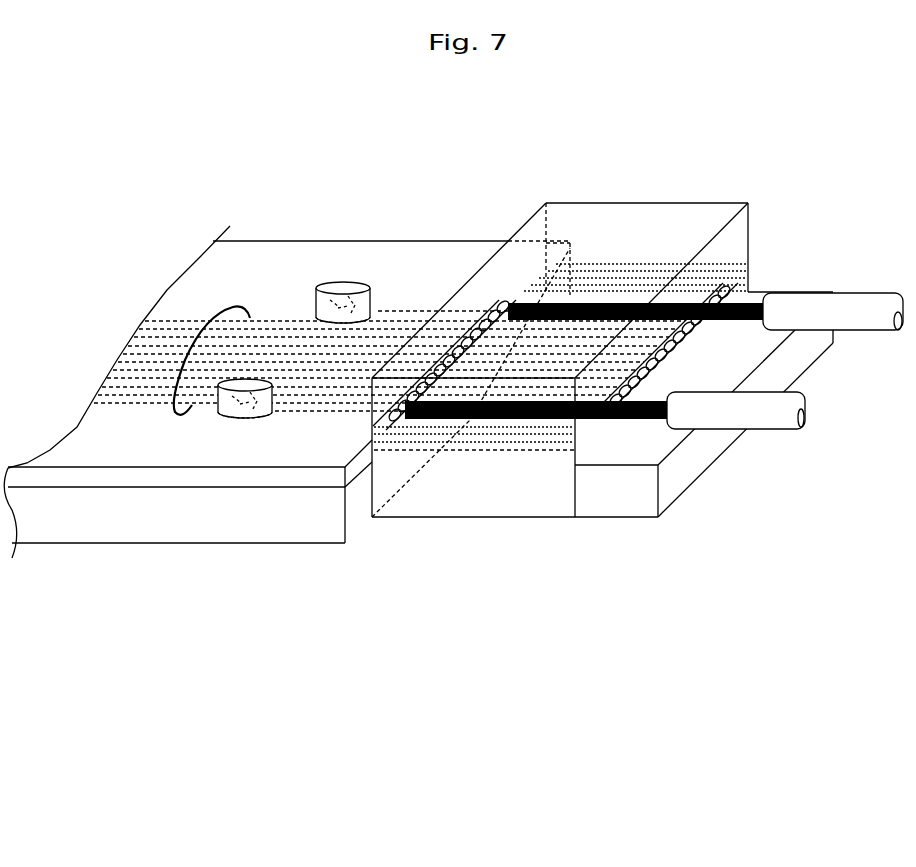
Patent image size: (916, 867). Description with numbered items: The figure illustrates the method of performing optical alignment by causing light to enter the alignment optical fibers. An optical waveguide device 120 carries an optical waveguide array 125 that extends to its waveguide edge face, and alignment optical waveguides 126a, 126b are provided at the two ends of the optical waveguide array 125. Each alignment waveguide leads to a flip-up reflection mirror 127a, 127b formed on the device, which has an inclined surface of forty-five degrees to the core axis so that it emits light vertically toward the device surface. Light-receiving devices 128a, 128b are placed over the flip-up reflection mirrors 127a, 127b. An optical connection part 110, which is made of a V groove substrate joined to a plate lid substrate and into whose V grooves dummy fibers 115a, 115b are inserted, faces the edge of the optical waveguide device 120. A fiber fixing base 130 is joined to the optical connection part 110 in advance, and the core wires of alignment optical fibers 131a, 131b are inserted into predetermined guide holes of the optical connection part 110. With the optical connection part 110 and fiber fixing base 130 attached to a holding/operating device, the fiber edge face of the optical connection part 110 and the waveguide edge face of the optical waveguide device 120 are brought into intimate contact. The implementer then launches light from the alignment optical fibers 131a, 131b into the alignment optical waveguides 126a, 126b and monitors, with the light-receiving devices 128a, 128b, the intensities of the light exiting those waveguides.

The optical connection part 110 is at (643, 185).
The dummy fiber 115a is at (602, 425).
The dummy fiber 115b is at (728, 292).
The optical waveguide device 120 is at (420, 232).
The optical waveguide array 125 is at (240, 305).
The alignment optical waveguide 126a is at (315, 415).
The alignment optical waveguide 126b is at (402, 306).
The flip-up reflection mirror 127a is at (236, 425).
The flip-up reflection mirror 127b is at (318, 294).
The light-receiving device 128a is at (259, 422).
The light-receiving device 128b is at (345, 283).
The fiber fixing base 130 is at (654, 357).
The alignment optical fiber 131a is at (777, 410).
The alignment optical fiber 131b is at (863, 302).